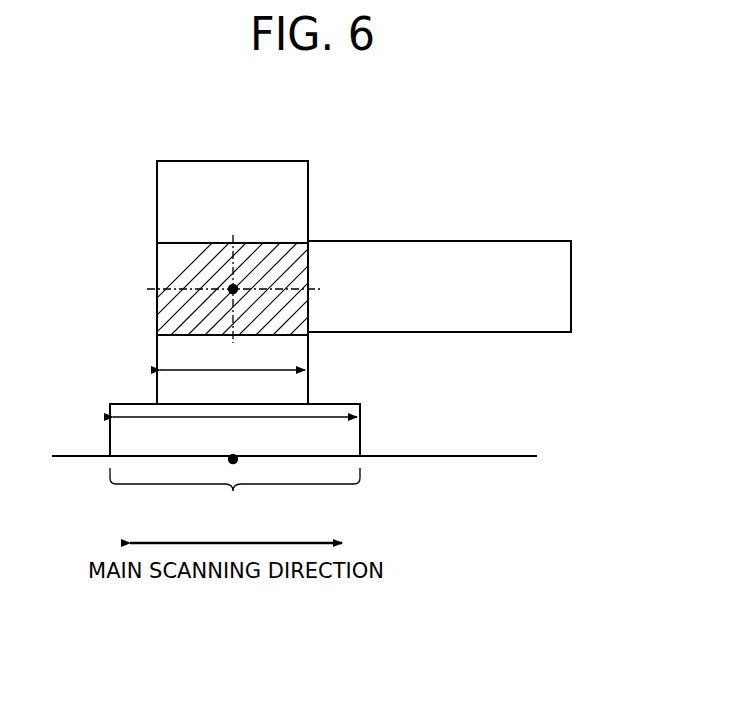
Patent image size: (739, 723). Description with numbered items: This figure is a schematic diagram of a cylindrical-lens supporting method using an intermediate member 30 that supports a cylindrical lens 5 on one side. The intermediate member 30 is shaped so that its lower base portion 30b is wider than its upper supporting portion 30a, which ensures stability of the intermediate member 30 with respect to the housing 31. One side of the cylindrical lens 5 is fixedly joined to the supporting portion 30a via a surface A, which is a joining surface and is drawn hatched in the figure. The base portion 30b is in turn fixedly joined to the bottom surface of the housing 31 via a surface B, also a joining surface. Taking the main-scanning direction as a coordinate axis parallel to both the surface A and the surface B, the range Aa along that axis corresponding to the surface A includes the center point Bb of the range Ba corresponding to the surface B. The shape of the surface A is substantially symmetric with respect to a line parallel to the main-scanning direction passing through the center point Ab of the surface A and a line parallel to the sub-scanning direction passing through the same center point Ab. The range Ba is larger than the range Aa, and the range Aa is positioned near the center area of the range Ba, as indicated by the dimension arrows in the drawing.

The intermediate member 30 is at (287, 151).
The supporting portion 30a is at (165, 196).
The base portion 30b is at (360, 432).
The cylindrical lens 5 is at (457, 248).
The housing 31 is at (467, 464).
The surface A is at (166, 266).
The range Aa is at (180, 372).
The center point Ab is at (236, 286).
The surface B is at (235, 492).
The range Ba is at (150, 418).
The center point Bb is at (240, 455).